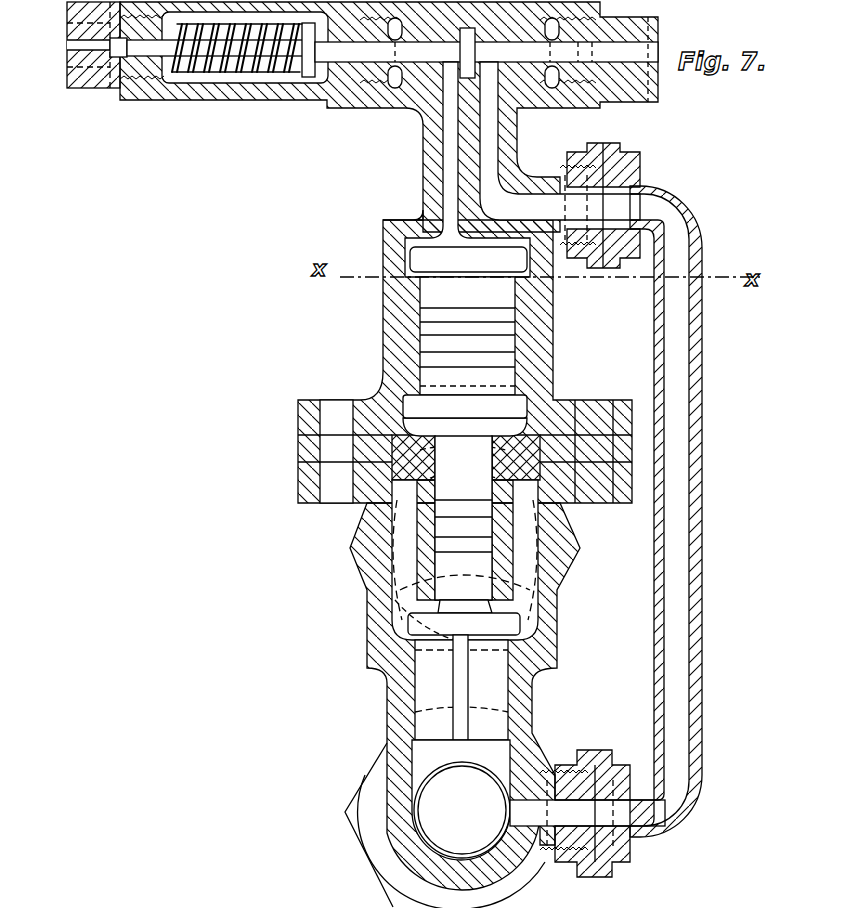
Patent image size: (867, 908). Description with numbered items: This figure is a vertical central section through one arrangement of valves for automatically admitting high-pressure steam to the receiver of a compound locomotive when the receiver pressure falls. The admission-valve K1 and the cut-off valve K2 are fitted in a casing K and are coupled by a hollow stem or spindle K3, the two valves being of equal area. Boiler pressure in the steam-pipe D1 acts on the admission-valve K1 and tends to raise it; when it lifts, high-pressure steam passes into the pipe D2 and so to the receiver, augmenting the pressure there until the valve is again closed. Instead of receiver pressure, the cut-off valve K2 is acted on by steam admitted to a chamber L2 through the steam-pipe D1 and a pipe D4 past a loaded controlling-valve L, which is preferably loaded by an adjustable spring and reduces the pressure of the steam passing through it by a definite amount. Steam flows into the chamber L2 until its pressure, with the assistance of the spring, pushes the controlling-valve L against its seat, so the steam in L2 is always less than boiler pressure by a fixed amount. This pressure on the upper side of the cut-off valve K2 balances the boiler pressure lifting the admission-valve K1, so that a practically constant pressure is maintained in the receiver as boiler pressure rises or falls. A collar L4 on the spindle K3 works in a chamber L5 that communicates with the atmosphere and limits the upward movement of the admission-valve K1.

The controlling-valve L is at (362, 59).
The chamber L2 is at (468, 259).
The collar L4 is at (465, 497).
The chamber L5 is at (398, 390).
The casing K is at (465, 555).
The admission-valve K1 is at (464, 625).
The cut-off valve K2 is at (467, 336).
The hollow stem K3 is at (465, 538).
The auxiliary steam-pipe D1 is at (461, 800).
The auxiliary steam-pipe D2 is at (436, 617).
The pipe D4 is at (664, 207).